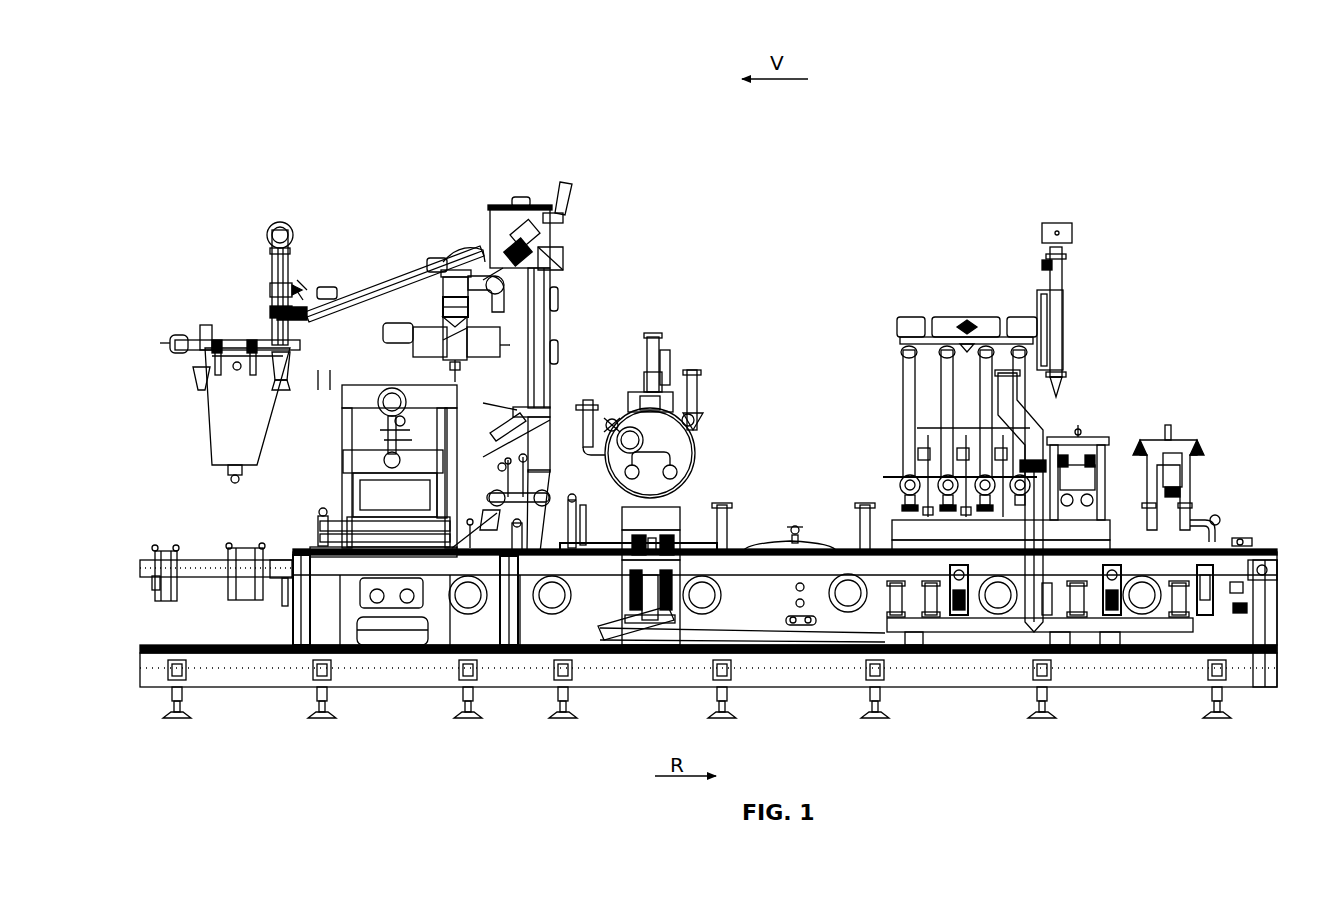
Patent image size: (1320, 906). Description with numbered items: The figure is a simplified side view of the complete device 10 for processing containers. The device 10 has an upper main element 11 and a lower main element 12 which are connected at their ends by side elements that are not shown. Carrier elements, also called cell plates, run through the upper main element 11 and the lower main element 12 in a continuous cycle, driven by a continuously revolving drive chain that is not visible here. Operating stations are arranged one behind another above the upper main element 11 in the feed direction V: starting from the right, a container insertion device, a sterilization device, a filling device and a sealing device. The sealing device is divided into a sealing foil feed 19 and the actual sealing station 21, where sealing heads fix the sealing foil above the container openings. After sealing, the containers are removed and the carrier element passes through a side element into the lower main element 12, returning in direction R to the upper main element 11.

The device 10 is at (972, 158).
The upper main element 11 is at (1262, 540).
The lower main element 12 is at (1244, 706).
The sealing foil feed 19 is at (580, 355).
The sealing station 21 is at (322, 456).